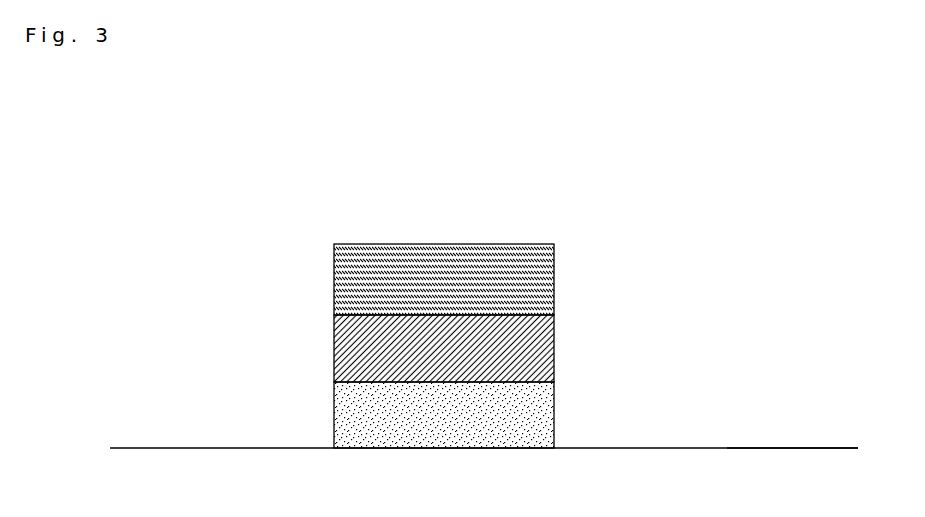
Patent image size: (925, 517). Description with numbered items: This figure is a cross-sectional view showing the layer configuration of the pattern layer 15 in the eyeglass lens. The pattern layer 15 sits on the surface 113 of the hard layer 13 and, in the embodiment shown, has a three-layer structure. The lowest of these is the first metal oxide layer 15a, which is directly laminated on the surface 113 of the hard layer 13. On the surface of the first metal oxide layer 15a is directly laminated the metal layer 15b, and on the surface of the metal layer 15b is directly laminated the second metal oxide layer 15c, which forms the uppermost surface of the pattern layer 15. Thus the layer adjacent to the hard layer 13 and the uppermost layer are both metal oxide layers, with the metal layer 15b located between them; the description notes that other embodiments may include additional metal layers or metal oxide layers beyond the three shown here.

The hard layer 13 is at (210, 477).
The surface of hard layer 113 is at (727, 448).
The pattern layer 15 is at (542, 331).
The first metal oxide layer 15a is at (500, 403).
The metal layer 15b is at (555, 342).
The second metal oxide layer 15c is at (555, 275).